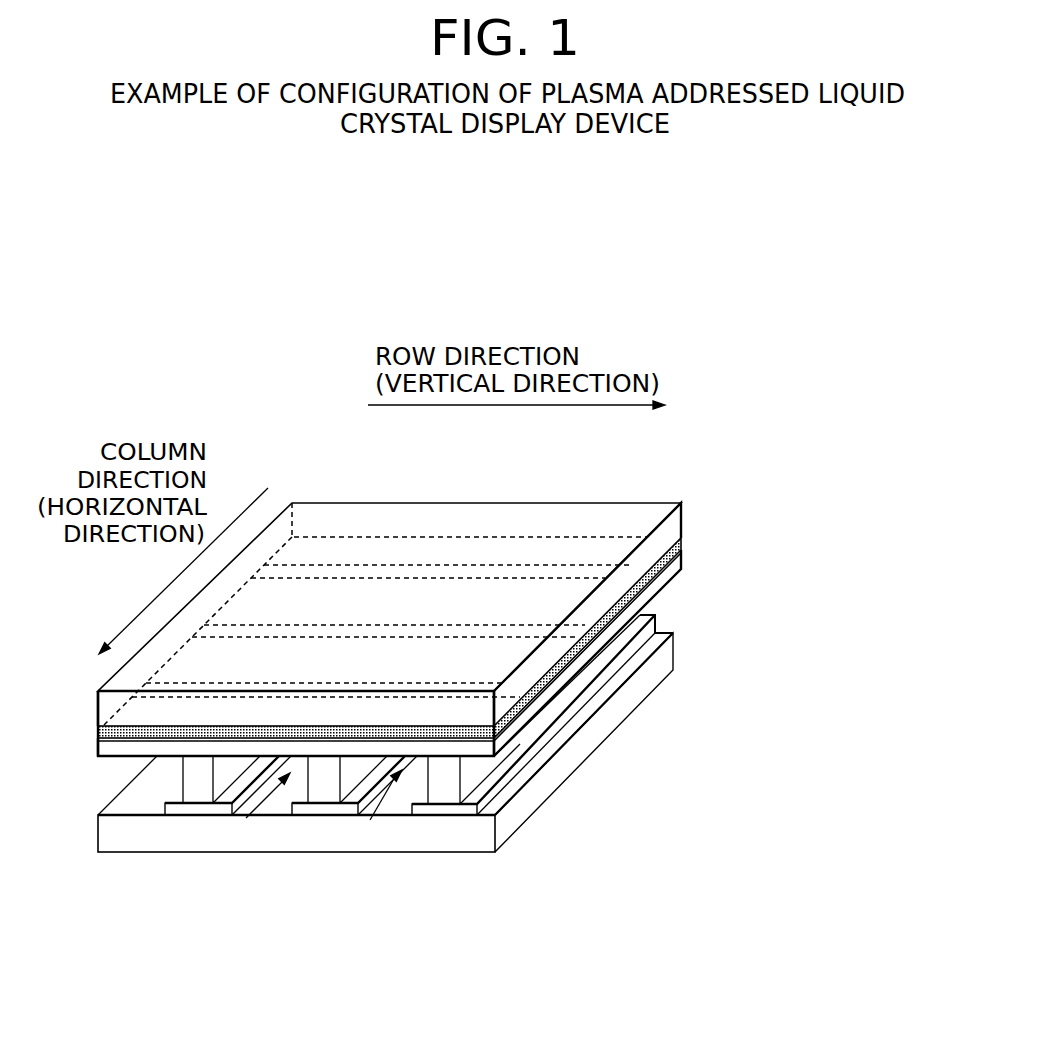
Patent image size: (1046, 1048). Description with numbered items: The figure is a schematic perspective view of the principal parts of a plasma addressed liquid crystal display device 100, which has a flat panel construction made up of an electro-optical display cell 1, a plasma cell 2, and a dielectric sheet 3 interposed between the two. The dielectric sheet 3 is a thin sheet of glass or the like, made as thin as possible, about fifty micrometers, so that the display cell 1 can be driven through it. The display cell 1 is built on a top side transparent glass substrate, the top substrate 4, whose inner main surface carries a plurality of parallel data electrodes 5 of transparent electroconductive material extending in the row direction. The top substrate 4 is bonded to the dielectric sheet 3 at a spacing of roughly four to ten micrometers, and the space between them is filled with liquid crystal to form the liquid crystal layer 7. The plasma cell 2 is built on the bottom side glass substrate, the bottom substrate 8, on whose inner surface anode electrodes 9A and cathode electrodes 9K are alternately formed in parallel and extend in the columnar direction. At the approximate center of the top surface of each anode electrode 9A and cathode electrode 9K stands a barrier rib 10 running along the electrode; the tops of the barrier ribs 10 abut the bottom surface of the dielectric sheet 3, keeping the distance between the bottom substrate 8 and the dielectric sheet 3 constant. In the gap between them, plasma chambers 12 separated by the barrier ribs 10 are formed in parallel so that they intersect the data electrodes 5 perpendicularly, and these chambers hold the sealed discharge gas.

The plasma addressed liquid crystal display device 100 is at (293, 420).
The electro-optical display cell 1 is at (712, 513).
The plasma cell 2 is at (690, 644).
The dielectric sheet 3 is at (663, 572).
The top substrate 4 is at (327, 521).
The data electrodes 5 is at (655, 562).
The liquid crystal layer 7 is at (677, 543).
The bottom substrate 8 is at (530, 803).
The anode electrodes 9A is at (203, 807).
The cathode electrodes 9K is at (318, 813).
The barrier rib 10 is at (190, 768).
The plasma chambers 12 is at (246, 818).